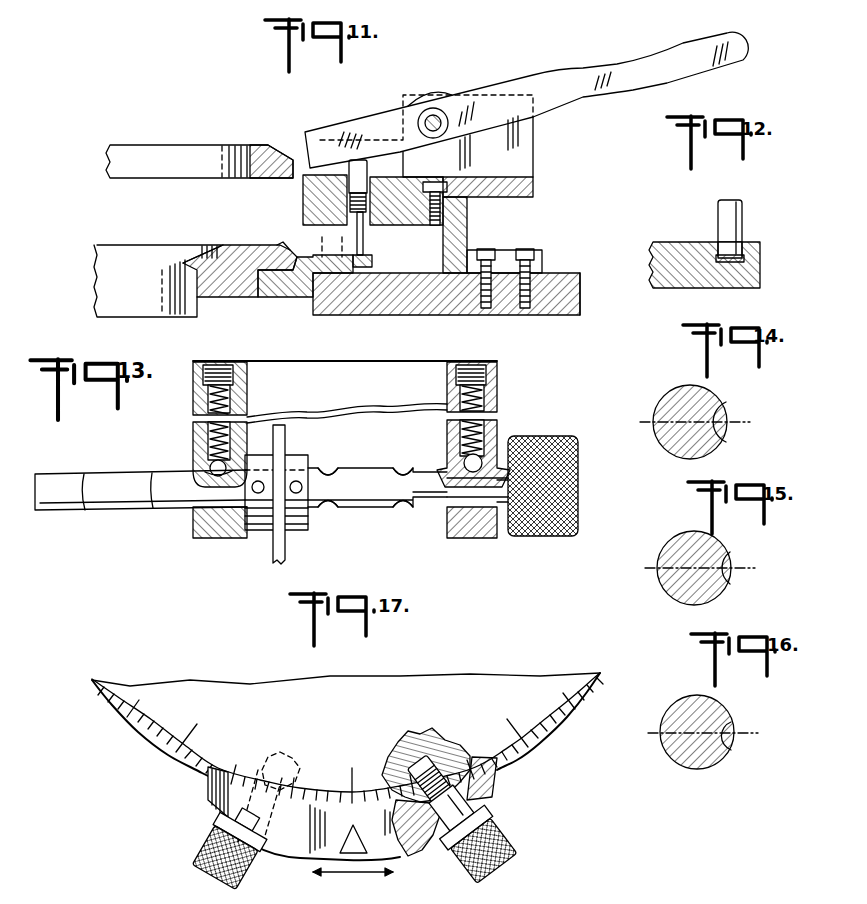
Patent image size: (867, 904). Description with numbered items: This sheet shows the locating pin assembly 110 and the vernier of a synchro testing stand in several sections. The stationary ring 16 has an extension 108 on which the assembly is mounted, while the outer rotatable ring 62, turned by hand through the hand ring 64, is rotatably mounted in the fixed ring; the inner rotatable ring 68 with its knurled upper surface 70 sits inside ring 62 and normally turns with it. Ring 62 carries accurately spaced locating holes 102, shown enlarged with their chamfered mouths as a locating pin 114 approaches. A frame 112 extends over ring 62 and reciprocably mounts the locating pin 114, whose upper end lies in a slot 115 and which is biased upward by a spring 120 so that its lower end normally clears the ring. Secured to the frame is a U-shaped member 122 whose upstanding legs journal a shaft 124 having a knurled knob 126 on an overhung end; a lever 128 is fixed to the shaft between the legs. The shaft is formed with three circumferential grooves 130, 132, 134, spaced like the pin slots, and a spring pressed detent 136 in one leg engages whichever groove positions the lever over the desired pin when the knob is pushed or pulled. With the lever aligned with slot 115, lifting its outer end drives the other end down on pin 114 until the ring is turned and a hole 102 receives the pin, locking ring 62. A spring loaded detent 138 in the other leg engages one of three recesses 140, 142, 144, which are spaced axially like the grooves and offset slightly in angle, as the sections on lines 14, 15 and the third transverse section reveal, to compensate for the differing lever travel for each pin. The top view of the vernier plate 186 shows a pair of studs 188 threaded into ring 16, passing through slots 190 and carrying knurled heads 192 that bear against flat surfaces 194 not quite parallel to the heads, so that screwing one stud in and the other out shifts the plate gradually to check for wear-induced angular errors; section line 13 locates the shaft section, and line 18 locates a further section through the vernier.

In FIG. 11, the stationary ring 16 is at (366, 302).
In FIG. 13, the stationary ring 16 is at (91, 560).
In FIG. 17, the stationary ring 16 is at (553, 733).
In FIG. 11, the outer rotatable ring 62 is at (285, 297).
In FIG. 12, the outer rotatable ring 62 is at (678, 270).
In FIG. 17, the outer rotatable ring 62 is at (580, 704).
In FIG. 11, the hand ring 64 is at (276, 143).
In FIG. 11, the inner rotatable ring 68 is at (243, 296).
In FIG. 11, the knurled upper surface 70 is at (287, 247).
In FIG. 11, the locating holes 102 is at (373, 259).
In FIG. 12, the locating holes 102 is at (735, 283).
In FIG. 11, the extension 108 is at (565, 300).
In FIG. 11, the locating pin assembly 110 is at (545, 256).
In FIG. 11, the frame 112 is at (470, 232).
In FIG. 11, the locating pin 114 is at (405, 156).
In FIG. 12, the locating pin 114 is at (722, 209).
In FIG. 11, the slot 115 is at (306, 186).
In FIG. 11, the spring 120 is at (374, 226).
In FIG. 11, the U-shaped member 122 is at (535, 191).
In FIG. 13, the U-shaped member 122 is at (248, 394).
In FIG. 11, the shaft 124 is at (440, 108).
In FIG. 13, the shaft 124 is at (46, 475).
In FIG. 14, the shaft 124 is at (663, 404).
In FIG. 15, the shaft 124 is at (668, 568).
In FIG. 16, the shaft 124 is at (670, 734).
In FIG. 13, the knurled knob 126 is at (548, 536).
In FIG. 11, the lever 128 is at (660, 58).
In FIG. 13, the lever 128 is at (285, 440).
In FIG. 13, the circumferential groove 130 is at (477, 522).
In FIG. 13, the circumferential groove 132 is at (407, 504).
In FIG. 13, the circumferential groove 134 is at (329, 507).
In FIG. 13, the spring pressed detent 136 is at (465, 460).
In FIG. 13, the spring loaded detent 138 is at (210, 465).
In FIG. 13, the recess 140 is at (212, 487).
In FIG. 14, the recess 140 is at (730, 421).
In FIG. 13, the recess 142 is at (150, 511).
In FIG. 15, the recess 142 is at (733, 569).
In FIG. 13, the recess 144 is at (70, 512).
In FIG. 16, the recess 144 is at (735, 736).
In FIG. 17, the vernier plate 186 is at (308, 840).
In FIG. 17, the studs 188 is at (270, 752).
In FIG. 17, the slots 190 is at (472, 803).
In FIG. 17, the knurled heads 192 is at (205, 853).
In FIG. 17, the flat surfaces 194 is at (215, 812).
In FIG. 11, the section line 13— 13 is at (362, 122).
In FIG. 13, the section line 14— 14 is at (222, 576).
In FIG. 13, the section line 15— 15 is at (159, 560).
In FIG. 17, the section line 18— 18 is at (507, 882).